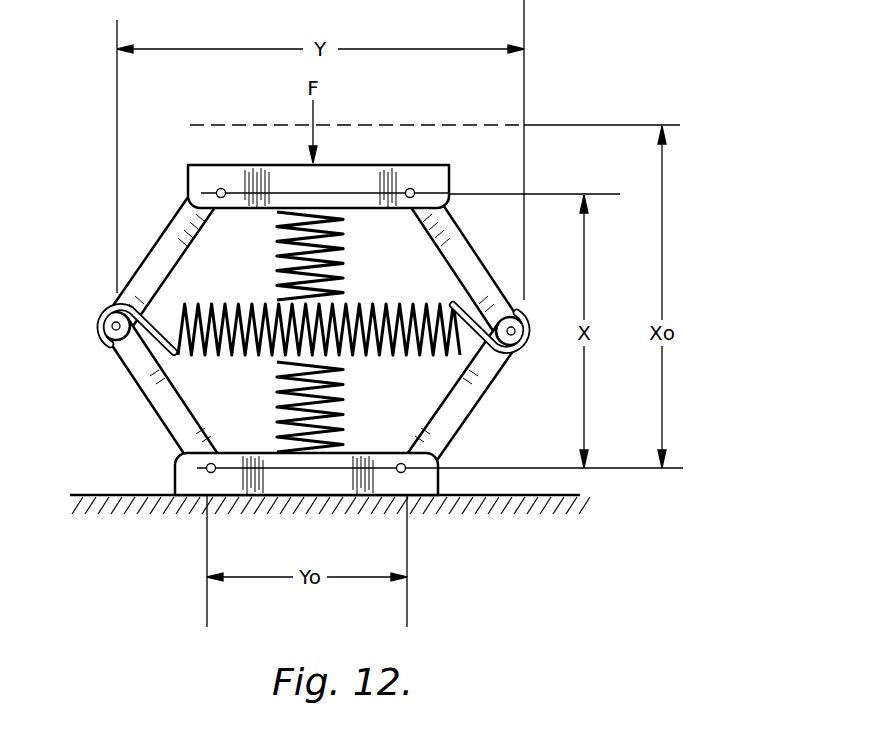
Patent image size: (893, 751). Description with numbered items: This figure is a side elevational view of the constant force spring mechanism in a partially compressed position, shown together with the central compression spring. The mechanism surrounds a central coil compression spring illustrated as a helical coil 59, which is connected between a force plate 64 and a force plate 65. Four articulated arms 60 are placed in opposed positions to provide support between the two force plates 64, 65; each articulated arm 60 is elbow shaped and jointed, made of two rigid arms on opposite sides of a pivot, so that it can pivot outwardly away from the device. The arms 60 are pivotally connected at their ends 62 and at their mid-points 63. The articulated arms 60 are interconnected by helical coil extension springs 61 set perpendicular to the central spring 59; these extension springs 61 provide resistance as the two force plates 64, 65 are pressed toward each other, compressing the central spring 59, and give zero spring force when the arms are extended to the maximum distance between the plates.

The helical coil 59 is at (345, 266).
The articulated arms 60 is at (196, 255).
The helical coil extension springs 61 is at (400, 358).
The ends 62 is at (220, 189).
The mid-points 63 is at (96, 328).
The force plate 64 is at (270, 452).
The force plate 65 is at (366, 165).